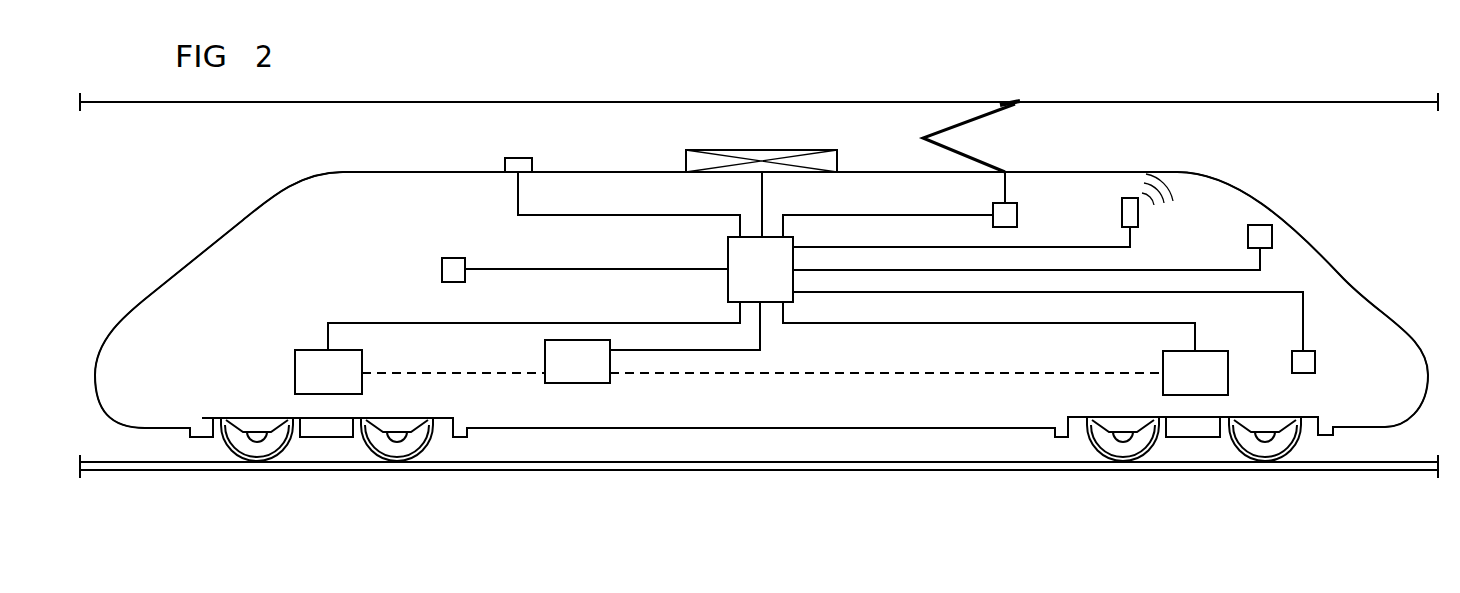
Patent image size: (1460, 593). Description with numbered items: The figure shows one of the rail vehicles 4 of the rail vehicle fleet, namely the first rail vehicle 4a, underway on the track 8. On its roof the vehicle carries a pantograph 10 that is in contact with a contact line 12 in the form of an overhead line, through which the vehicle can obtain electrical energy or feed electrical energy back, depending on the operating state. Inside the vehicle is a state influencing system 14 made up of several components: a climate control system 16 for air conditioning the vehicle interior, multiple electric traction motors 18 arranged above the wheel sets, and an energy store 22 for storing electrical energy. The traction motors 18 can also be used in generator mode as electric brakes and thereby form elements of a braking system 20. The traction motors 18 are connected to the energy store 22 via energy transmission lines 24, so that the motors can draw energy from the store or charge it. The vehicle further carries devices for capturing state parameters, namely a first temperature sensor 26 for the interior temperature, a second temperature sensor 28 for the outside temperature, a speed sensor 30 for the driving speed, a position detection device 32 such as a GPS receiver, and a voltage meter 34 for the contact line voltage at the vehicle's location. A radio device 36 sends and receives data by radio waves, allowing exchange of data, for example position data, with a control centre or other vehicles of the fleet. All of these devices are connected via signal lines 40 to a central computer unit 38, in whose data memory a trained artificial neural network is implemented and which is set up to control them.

The rail vehicle 4 is at (240, 169).
The first rail vehicle 4a is at (761, 273).
The track 8 is at (812, 470).
The pantograph 10 is at (947, 132).
The contact line 12 is at (1264, 102).
The state influencing system 14 is at (268, 368).
The climate control system 16 is at (727, 150).
The electric traction motors 18 is at (318, 350).
The braking system 20 is at (322, 302).
The energy store 22 is at (590, 383).
The energy transmission lines 24 is at (452, 375).
The first temperature sensor 26 is at (452, 258).
The second temperature sensor 28 is at (518, 158).
The speed sensor 30 is at (1315, 362).
The position detection device 32 is at (1272, 236).
The voltage meter 34 is at (1017, 209).
The radio device 36 is at (1122, 210).
The computer unit 38 is at (728, 290).
The signal lines 40 is at (762, 200).